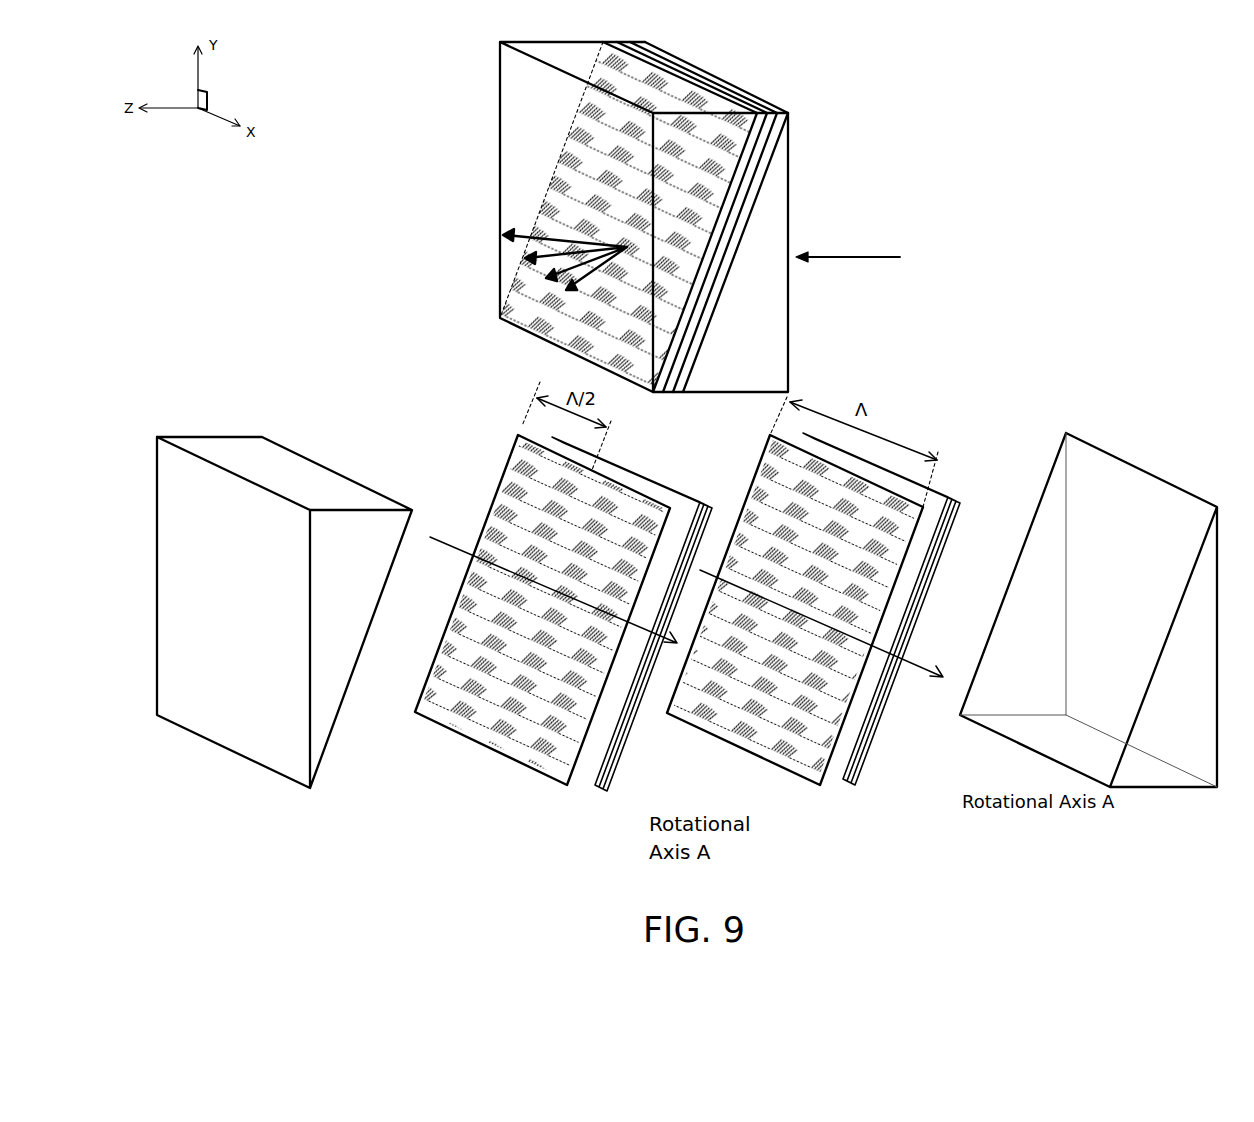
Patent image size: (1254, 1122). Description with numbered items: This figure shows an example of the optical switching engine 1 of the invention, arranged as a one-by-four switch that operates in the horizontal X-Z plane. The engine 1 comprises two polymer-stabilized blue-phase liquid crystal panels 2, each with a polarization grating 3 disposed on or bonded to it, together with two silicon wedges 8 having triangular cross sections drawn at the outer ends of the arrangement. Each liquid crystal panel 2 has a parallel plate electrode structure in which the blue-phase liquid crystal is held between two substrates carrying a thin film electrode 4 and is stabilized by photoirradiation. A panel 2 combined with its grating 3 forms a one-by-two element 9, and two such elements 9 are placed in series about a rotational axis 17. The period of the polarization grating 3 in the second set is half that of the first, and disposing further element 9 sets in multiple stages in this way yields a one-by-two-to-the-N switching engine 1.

The optical switching engine 1 is at (505, 98).
The polymer-stabilized blue-phase liquid crystal panel 2 is at (640, 462).
The polarization grating 3 is at (523, 530).
The thin film electrode 4 is at (513, 210).
The silicon wedge 8 is at (187, 582).
The 1×2 element 9 is at (638, 782).
The rotational axis A 17 is at (939, 783).